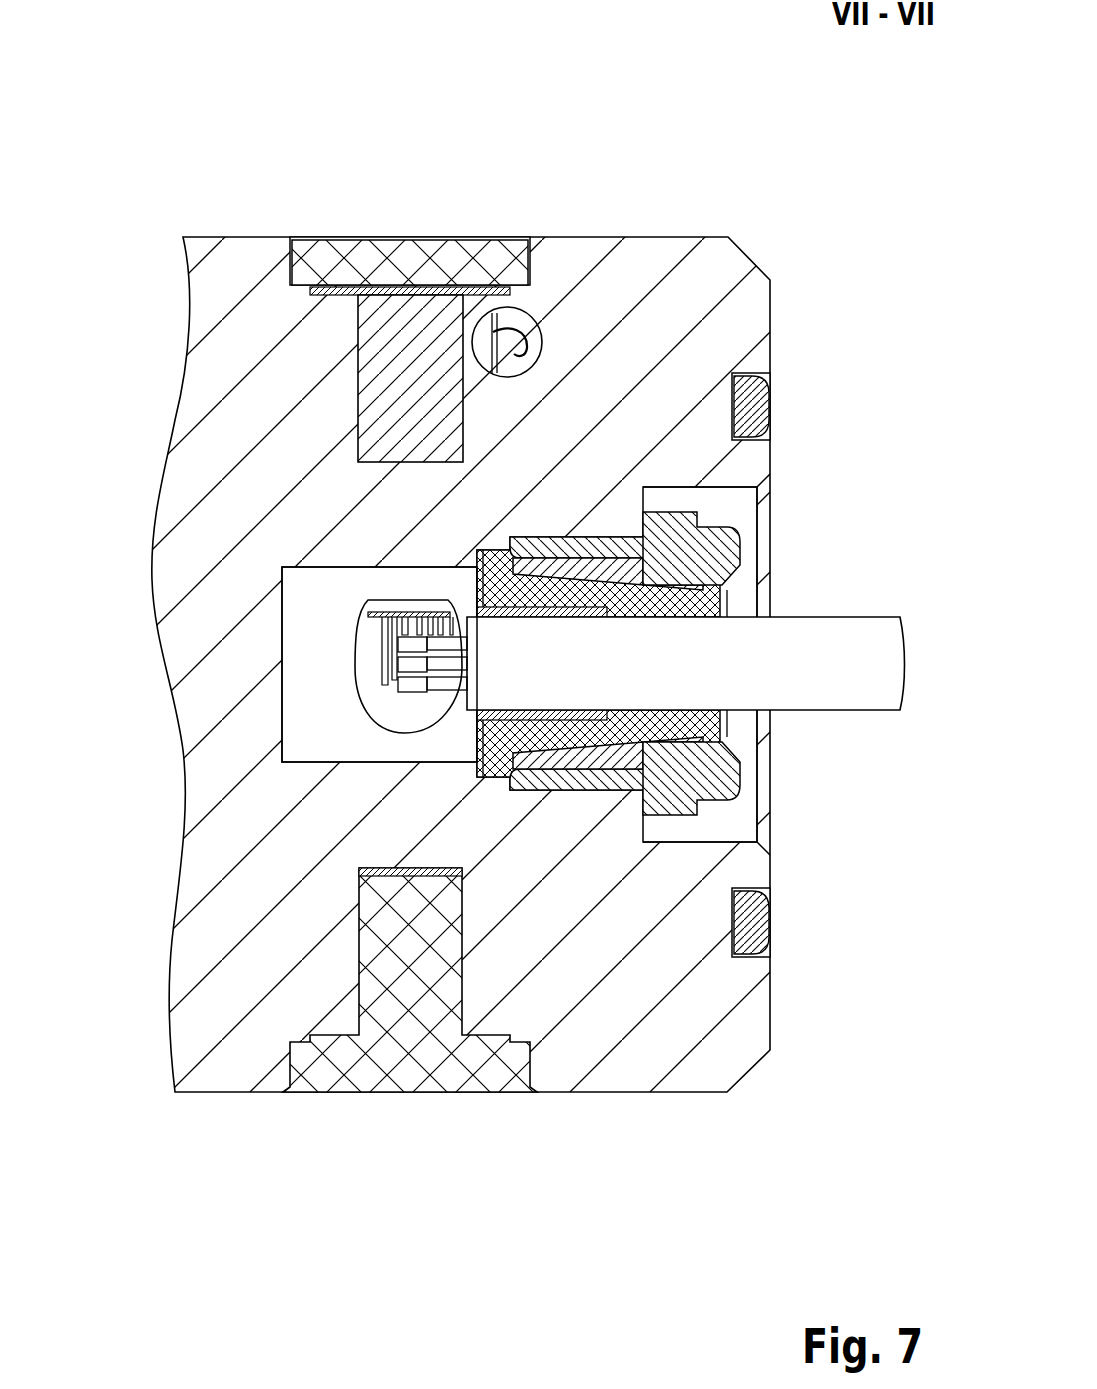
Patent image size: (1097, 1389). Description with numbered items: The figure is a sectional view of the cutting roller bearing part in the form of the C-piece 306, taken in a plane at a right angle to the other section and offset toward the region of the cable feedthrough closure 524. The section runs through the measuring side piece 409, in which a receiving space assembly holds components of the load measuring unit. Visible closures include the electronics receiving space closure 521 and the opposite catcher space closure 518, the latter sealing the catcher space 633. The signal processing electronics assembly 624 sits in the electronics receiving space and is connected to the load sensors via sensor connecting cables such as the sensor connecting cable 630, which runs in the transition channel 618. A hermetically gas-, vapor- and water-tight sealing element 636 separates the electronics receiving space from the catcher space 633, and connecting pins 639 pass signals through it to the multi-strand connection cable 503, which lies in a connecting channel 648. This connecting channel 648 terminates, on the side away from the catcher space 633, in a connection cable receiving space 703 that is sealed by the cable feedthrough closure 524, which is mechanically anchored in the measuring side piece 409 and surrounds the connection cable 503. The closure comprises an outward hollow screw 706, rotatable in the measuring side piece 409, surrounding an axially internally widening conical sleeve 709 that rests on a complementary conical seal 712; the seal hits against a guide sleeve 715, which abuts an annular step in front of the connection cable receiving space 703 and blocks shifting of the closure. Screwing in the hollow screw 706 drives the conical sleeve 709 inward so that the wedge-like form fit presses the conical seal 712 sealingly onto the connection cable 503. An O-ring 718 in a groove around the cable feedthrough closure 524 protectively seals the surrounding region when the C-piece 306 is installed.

The C-piece 306 is at (500, 606).
The measuring side piece 409 is at (678, 317).
The connection cable 503 is at (818, 683).
The catcher space closure 518 is at (423, 1055).
The electronics receiving space closure 521 is at (338, 253).
The cable feedthrough closure 524 is at (783, 548).
The transition channel 618 is at (507, 363).
The signal processing electronics assembly 624 is at (483, 345).
The sensor connecting cable 630 is at (493, 332).
The catcher space 633 is at (372, 668).
The sealing element 636 is at (413, 605).
The connecting pins 639 is at (437, 683).
The connecting channel 648 is at (427, 710).
The connection cable receiving space 703 is at (350, 613).
The hollow screw 706 is at (745, 777).
The conical sleeve 709 is at (570, 738).
The conical seal 712 is at (667, 755).
The guide sleeve 715 is at (475, 770).
The O-ring 718 is at (748, 393).